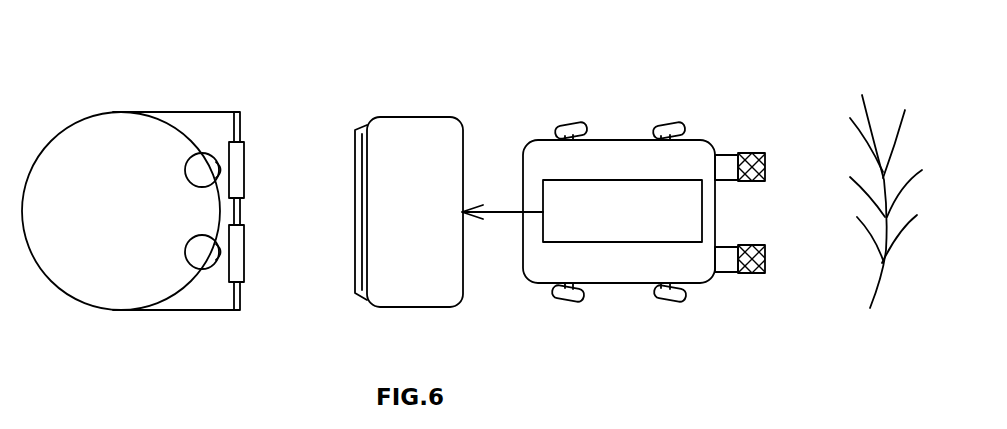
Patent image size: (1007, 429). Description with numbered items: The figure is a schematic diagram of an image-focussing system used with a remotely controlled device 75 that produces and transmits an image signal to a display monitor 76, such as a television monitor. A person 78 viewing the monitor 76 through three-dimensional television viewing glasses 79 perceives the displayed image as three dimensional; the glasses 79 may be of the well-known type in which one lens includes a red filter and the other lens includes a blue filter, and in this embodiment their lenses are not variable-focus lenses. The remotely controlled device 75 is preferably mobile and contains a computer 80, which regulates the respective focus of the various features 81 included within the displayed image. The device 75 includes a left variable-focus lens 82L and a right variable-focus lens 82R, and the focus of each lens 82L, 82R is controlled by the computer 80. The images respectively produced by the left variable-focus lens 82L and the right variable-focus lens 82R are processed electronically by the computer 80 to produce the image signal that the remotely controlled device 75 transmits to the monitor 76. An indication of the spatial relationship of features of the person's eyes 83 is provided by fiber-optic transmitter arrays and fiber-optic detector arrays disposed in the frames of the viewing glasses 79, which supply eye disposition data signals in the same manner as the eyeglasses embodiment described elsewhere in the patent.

The remotely controlled device 75 is at (608, 140).
The display monitor 76 is at (445, 117).
The person 78 is at (78, 120).
The 3D-TV-viewing glasses 79 is at (208, 112).
The computer 80 is at (610, 242).
The features 81 is at (870, 308).
The left variable-focus lens 82L is at (757, 153).
The right variable-focus lens 82R is at (757, 273).
The person's eyes 83 is at (186, 168).